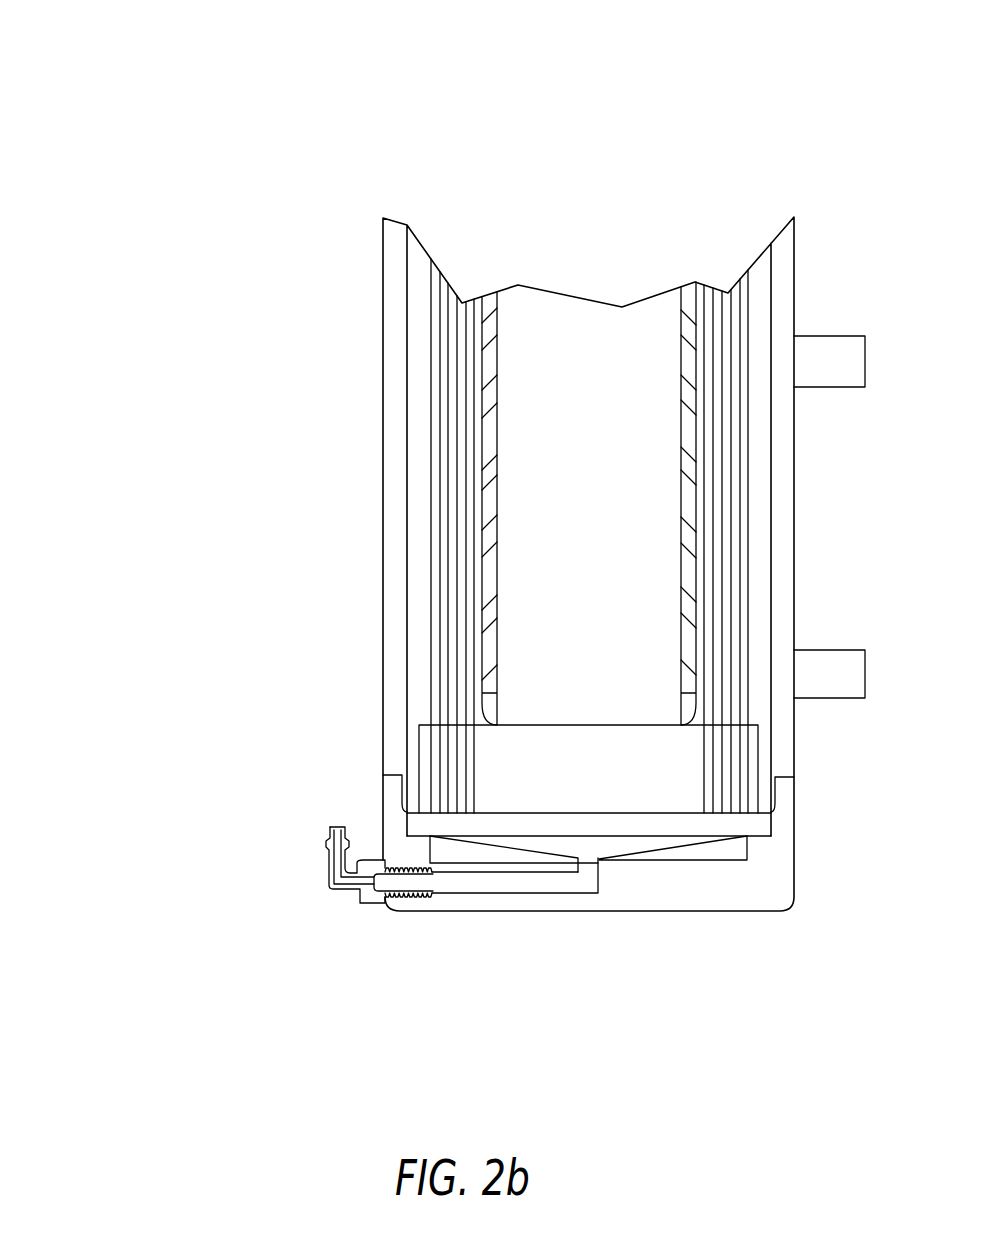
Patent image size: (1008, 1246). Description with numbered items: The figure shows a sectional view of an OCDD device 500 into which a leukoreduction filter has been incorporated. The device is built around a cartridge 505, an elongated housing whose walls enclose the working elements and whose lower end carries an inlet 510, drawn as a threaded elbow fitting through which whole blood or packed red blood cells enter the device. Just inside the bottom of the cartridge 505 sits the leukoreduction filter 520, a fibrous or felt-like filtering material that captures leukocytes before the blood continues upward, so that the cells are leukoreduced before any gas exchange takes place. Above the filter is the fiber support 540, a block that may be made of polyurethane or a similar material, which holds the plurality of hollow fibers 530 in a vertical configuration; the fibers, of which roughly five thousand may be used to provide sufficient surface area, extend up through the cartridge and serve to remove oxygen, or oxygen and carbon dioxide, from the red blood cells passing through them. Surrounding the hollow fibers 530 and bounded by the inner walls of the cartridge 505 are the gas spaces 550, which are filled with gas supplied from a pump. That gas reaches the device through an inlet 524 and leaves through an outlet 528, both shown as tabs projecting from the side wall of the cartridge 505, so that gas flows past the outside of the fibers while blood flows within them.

The OCDD device 500 is at (646, 111).
The cartridge 505 is at (383, 575).
The inlet 510 is at (332, 841).
The leukoreduction filter 520 is at (435, 817).
The gas inlet 524 is at (810, 686).
The gas outlet 528 is at (818, 357).
The plurality of hollow fibers 530 is at (444, 446).
The fiber support 540 is at (501, 767).
The gas spaces 550 is at (715, 566).